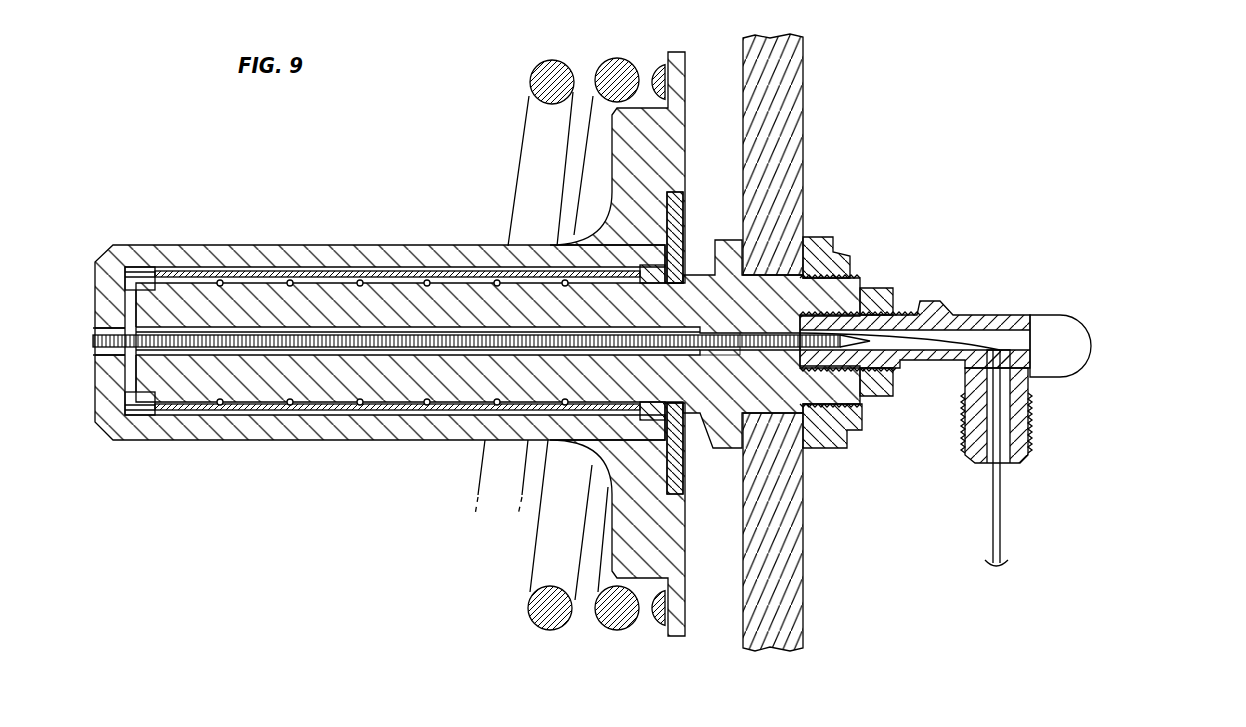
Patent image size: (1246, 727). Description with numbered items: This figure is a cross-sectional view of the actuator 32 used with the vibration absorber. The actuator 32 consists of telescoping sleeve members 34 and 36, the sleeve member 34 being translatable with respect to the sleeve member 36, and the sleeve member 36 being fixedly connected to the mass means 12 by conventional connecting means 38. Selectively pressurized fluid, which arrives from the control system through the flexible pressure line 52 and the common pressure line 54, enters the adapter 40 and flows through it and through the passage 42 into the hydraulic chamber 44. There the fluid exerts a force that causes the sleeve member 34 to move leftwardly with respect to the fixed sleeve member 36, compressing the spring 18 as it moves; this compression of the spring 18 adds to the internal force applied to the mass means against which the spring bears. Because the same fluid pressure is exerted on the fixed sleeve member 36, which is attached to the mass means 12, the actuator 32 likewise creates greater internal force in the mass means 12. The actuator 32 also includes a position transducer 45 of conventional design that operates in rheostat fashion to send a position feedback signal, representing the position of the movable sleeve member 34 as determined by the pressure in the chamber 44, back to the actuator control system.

The mass means 12 is at (797, 104).
The spring 18 is at (614, 60).
The actuator 32 is at (405, 184).
The sleeve member 34 is at (280, 252).
The sleeve member 36 is at (253, 393).
The connecting means 38 is at (838, 432).
The adapter 40 is at (924, 315).
The passage 42 is at (93, 343).
The hydraulic chamber 44 is at (128, 300).
The position transducer 45 is at (702, 362).
The flexible pressure line 52 is at (1024, 463).
The common pressure line 54 is at (1022, 342).